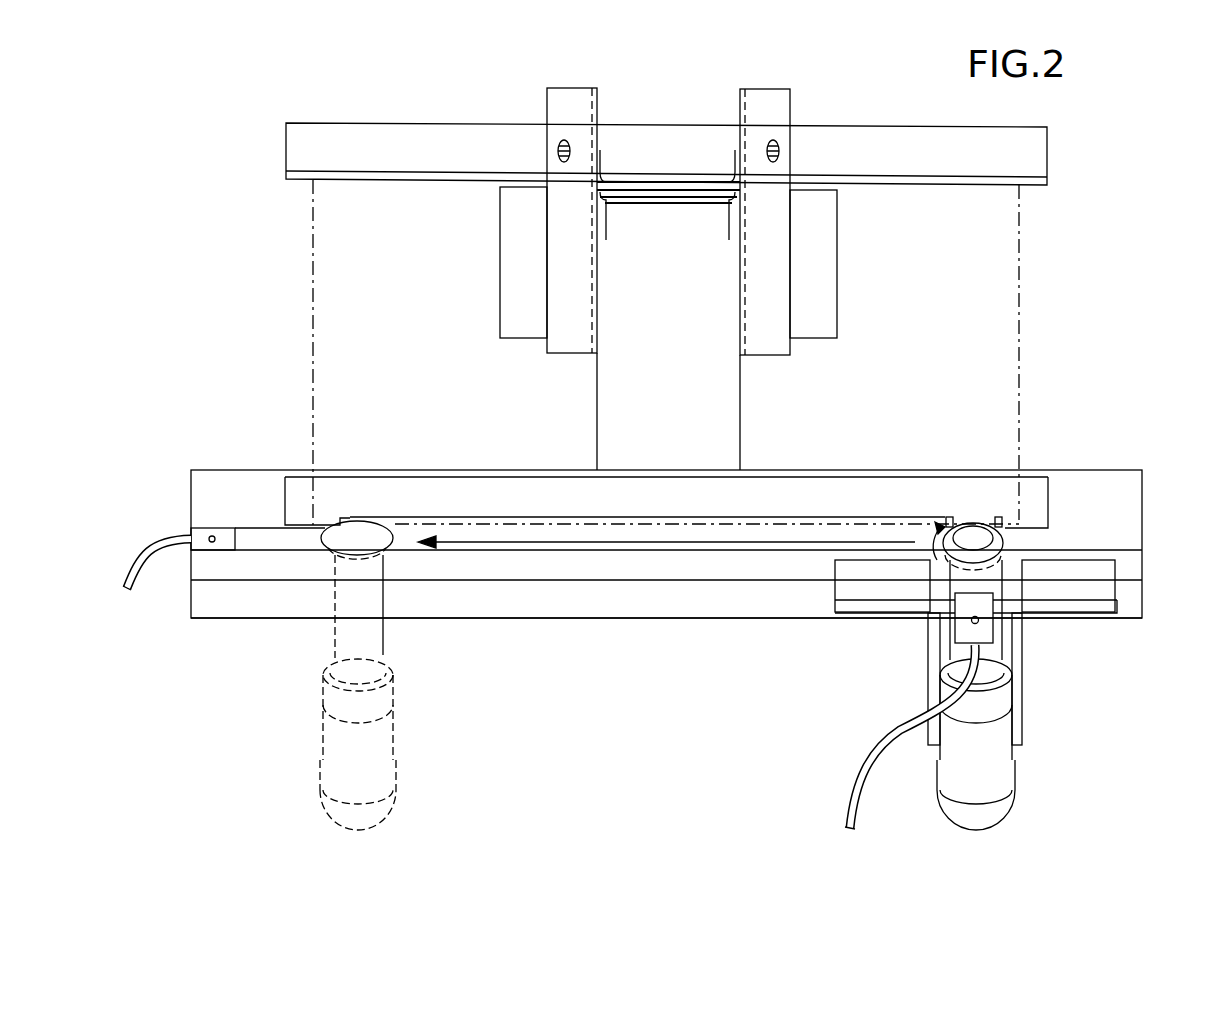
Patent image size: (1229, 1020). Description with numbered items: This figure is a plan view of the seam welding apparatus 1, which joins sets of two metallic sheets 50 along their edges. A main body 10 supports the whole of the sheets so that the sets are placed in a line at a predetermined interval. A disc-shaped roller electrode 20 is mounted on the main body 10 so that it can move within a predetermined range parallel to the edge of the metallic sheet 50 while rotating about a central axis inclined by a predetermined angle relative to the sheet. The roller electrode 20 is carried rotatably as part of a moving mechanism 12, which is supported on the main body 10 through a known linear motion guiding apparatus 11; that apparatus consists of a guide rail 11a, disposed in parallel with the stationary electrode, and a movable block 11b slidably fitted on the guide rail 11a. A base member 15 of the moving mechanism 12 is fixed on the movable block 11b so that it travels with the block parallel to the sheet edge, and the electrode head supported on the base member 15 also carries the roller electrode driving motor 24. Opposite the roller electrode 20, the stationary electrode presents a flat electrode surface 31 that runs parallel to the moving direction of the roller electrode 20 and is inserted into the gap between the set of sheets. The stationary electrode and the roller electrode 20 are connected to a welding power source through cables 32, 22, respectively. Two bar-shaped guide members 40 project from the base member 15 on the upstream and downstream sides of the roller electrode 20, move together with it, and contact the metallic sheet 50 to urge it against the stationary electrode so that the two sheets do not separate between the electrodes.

The seam welding apparatus 1 is at (1103, 231).
The main body 10 is at (294, 144).
The linear motion guiding apparatus 11 is at (736, 716).
The guide rail 11a is at (657, 568).
The movable block 11b is at (838, 589).
The moving mechanism 12 is at (1108, 828).
The base member 15 is at (933, 612).
The roller electrode 20 is at (1000, 540).
The cable 22 is at (853, 797).
The roller electrode driving motor 24 is at (1010, 805).
The electrode surface 31 is at (407, 518).
The cable 32 is at (140, 540).
The guide member 40 is at (950, 522).
The metallic sheet 50 is at (313, 240).